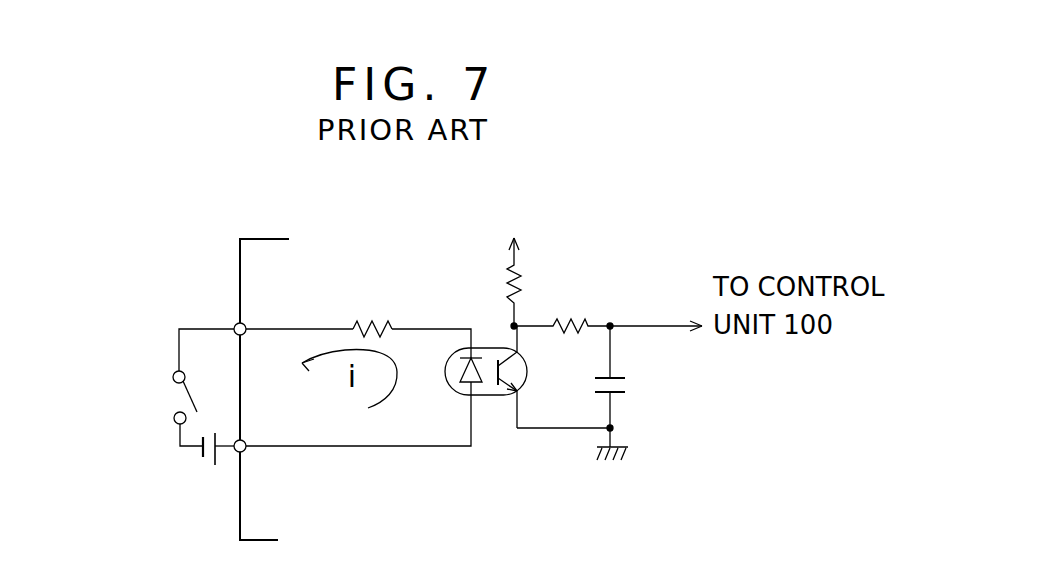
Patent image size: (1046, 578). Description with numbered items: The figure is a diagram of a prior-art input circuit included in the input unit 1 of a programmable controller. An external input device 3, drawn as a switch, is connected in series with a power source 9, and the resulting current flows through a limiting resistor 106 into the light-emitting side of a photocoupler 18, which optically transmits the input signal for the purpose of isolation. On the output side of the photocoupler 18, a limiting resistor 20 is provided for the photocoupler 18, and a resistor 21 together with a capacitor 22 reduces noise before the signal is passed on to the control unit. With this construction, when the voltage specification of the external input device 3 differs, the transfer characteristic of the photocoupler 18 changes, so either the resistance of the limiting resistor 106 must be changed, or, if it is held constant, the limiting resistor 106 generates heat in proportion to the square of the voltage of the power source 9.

The input unit 1 is at (238, 278).
The external input device 3 is at (174, 376).
The power source 9 is at (207, 470).
The limiting resistor 106 is at (353, 308).
The photocoupler 18 is at (490, 397).
The limiting resistor 20 is at (532, 288).
The resistor 21 is at (588, 312).
The capacitor 22 is at (633, 388).